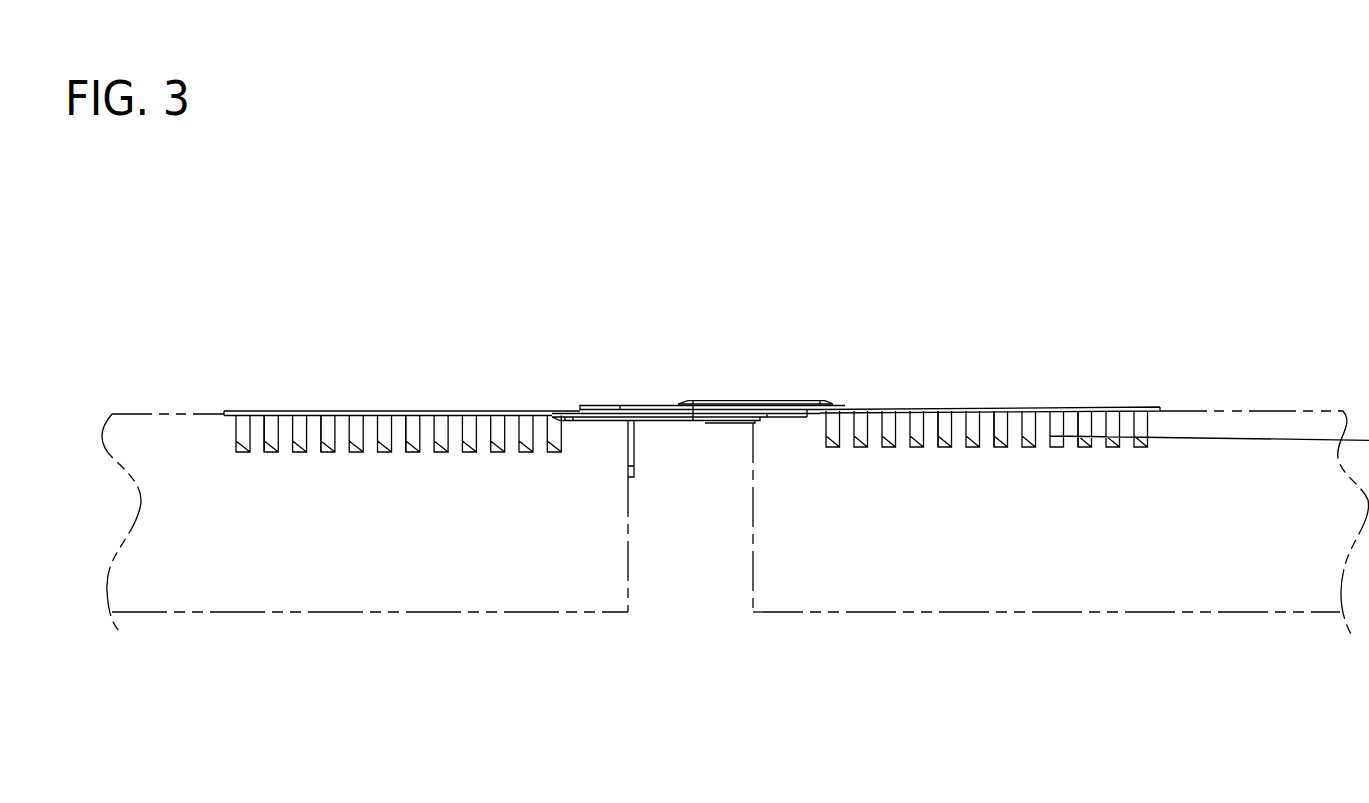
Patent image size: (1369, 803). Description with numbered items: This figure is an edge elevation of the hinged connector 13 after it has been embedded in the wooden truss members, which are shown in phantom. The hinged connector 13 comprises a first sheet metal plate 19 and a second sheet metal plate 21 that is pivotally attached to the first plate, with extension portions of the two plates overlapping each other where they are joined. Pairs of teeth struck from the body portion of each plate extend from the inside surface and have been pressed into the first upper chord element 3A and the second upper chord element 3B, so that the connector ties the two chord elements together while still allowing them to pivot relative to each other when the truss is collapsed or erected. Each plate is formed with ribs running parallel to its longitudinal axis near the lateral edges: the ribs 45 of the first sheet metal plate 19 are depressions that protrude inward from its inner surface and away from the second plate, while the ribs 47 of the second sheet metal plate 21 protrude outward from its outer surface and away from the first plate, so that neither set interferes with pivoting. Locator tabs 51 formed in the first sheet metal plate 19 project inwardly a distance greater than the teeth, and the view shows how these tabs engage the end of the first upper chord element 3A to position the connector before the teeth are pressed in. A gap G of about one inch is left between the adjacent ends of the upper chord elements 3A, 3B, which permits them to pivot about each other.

The first upper chord element 3A is at (983, 612).
The second upper chord element 3B is at (238, 612).
The gap G is at (682, 573).
The hinged connector 13 is at (820, 360).
The first sheet metal plate 19 is at (447, 390).
The second sheet metal plate 21 is at (978, 383).
The ribs of the first sheet metal plate 45 is at (665, 421).
The ribs of the second sheet metal plate 47 is at (748, 399).
The locator tabs 51 is at (627, 442).